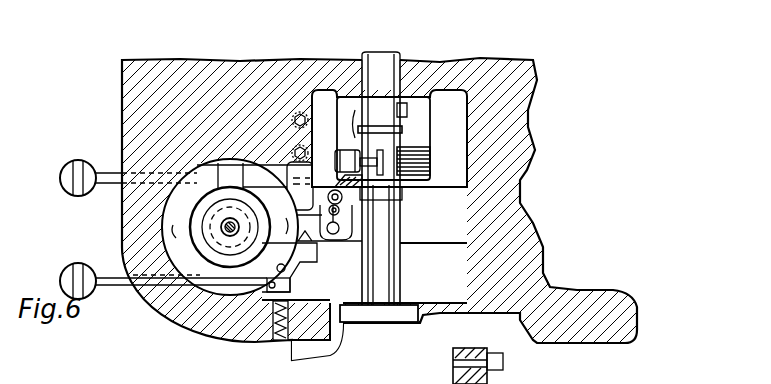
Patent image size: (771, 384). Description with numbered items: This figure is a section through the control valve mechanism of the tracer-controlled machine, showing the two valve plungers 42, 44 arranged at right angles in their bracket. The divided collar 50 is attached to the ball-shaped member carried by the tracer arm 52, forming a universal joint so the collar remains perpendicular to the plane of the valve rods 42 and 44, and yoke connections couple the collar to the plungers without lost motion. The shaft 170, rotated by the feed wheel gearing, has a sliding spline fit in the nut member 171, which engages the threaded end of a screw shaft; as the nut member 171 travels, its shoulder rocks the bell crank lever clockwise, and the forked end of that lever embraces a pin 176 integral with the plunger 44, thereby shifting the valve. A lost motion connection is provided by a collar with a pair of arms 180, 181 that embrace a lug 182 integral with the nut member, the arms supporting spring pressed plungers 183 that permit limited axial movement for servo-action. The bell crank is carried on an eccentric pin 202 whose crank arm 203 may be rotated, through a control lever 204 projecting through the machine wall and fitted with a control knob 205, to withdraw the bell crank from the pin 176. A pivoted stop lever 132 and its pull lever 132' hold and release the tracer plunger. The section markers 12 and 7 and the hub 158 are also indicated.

The arm 180 is at (322, 136).
The arm 181 is at (440, 115).
The nut member 171 is at (405, 126).
The lug 182 is at (383, 143).
The spring pressed plungers 183 is at (433, 162).
The control lever 204 is at (352, 185).
The eccentric pin 202 is at (363, 201).
The crank arm 203 is at (327, 197).
The section line 12 is at (330, 159).
The section line 7 is at (375, 19).
The valve plunger 44 is at (432, 237).
The shaft 170 is at (381, 283).
The pin 176 is at (322, 256).
The pivoted stop lever 132 is at (309, 270).
The lever 132' is at (163, 271).
The valve plunger 42 is at (220, 194).
The divided collar 50 is at (213, 228).
The tracer arm 52 is at (227, 240).
The control knob 205 is at (93, 167).
The gear hub 158 is at (490, 372).